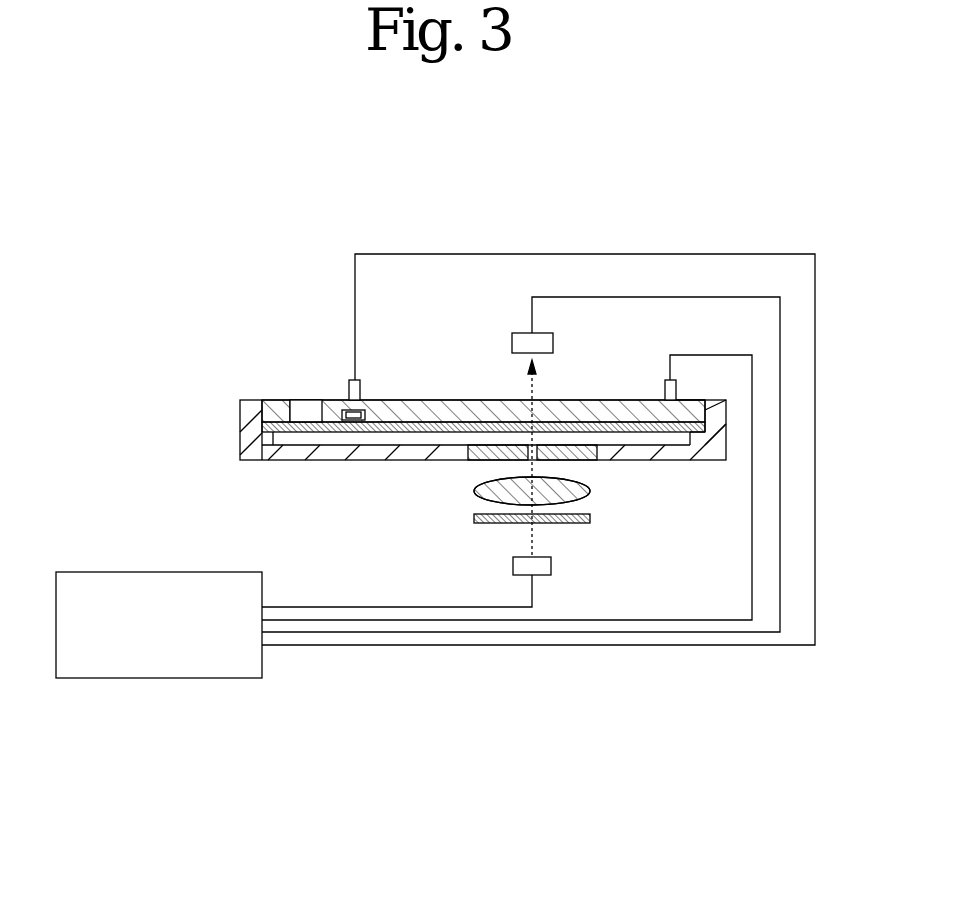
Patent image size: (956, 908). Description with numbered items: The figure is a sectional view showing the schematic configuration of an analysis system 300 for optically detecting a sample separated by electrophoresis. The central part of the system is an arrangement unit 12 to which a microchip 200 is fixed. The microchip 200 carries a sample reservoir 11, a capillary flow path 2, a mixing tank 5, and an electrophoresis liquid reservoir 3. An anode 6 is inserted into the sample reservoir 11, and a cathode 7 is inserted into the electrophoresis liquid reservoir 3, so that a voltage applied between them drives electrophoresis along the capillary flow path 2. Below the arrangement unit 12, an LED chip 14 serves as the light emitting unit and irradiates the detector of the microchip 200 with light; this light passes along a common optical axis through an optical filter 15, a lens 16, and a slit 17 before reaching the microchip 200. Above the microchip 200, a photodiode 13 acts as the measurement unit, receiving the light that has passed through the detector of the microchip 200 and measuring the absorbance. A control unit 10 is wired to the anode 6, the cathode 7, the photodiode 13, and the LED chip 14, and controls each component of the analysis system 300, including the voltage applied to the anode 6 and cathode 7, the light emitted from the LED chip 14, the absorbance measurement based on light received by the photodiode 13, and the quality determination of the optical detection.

The analysis system 300 is at (434, 198).
The control unit 10 is at (140, 679).
The arrangement unit 12 is at (238, 437).
The microchip 200 is at (264, 396).
The sample reservoir 11 is at (332, 400).
The mixing tank 5 is at (295, 437).
The capillary flow path 2 is at (378, 433).
The anode 6 is at (363, 390).
The cathode 7 is at (662, 394).
The electrophoresis liquid reservoir 3 is at (678, 400).
The photodiode 13 is at (512, 343).
The lens 16 is at (592, 491).
The optical filter 15 is at (592, 520).
The LED chip 14 is at (552, 570).
The slit 17 is at (472, 468).